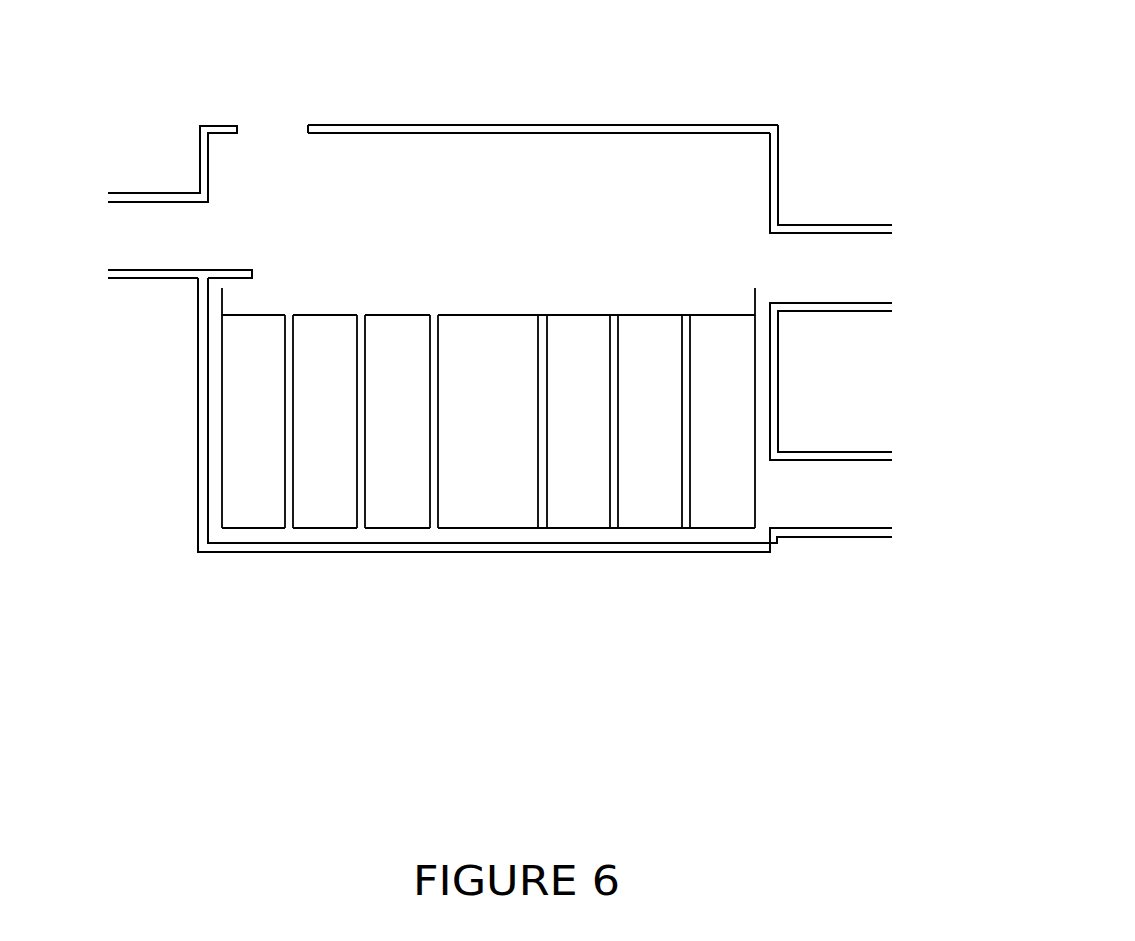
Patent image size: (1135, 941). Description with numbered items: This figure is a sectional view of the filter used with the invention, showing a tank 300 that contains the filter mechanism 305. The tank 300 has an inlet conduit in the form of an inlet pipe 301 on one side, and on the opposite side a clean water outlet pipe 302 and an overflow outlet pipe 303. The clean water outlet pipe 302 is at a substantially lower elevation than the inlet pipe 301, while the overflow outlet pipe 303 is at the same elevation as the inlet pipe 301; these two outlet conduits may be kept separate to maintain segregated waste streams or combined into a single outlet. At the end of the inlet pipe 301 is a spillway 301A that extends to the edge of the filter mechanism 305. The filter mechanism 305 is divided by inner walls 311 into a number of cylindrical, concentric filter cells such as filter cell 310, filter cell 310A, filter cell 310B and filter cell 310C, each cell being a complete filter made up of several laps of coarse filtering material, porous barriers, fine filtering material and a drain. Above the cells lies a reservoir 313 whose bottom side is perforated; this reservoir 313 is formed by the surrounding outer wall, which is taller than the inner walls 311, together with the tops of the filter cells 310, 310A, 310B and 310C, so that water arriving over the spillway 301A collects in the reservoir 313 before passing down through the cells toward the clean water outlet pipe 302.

The tank 300 is at (545, 125).
The inlet pipe 301 is at (172, 190).
The spillway 301A is at (252, 270).
The reservoir 313 is at (543, 166).
The overflow outlet pipe 303 is at (831, 203).
The clean water outlet pipe 302 is at (545, 415).
The filter cell 310 is at (421, 532).
The inner walls 311 is at (430, 432).
The filter cell 310A is at (397, 473).
The filter cell 310B is at (323, 487).
The filter cell 310C is at (252, 492).
The filter mechanism 305 is at (485, 503).